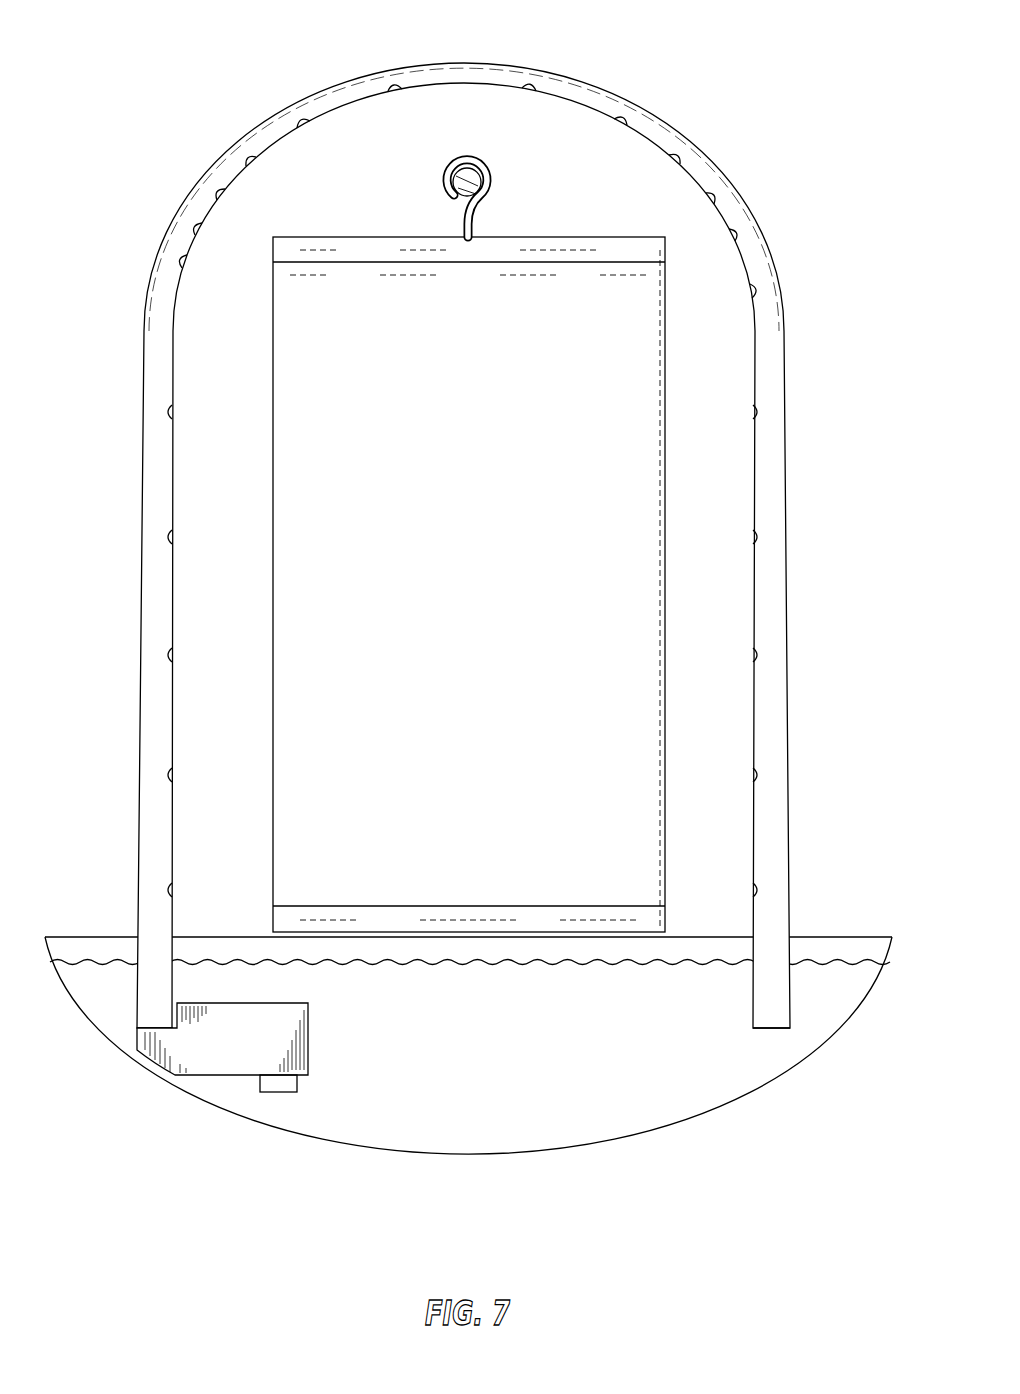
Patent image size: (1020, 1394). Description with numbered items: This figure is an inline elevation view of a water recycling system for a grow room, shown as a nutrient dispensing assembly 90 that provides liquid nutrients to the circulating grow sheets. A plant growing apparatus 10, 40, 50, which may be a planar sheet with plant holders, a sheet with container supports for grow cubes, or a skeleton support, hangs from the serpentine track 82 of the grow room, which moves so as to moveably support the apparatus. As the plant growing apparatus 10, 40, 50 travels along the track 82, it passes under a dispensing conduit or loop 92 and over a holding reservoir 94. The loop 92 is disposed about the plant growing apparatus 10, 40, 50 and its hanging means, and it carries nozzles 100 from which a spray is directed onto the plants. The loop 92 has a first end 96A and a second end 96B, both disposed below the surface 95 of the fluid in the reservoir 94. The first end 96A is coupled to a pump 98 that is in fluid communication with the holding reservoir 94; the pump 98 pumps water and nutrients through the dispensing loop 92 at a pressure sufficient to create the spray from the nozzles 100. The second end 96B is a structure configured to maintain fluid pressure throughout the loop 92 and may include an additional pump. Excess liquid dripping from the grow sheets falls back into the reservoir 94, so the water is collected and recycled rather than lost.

The nutrient dispensing assembly 90 is at (146, 64).
The dispensing conduit or loop 92 is at (444, 573).
The holding reservoir 94 is at (503, 1149).
The surface of the fluid 95 is at (820, 960).
The first end 96A is at (155, 1032).
The second end 96B is at (770, 1032).
The pump 98 is at (310, 1045).
The nozzles 100 is at (170, 538).
The serpentine track 82 is at (467, 178).
The plant growing apparatus 10 is at (483, 563).
The plant growing apparatus 40 is at (483, 563).
The skeleton support 50 is at (517, 290).